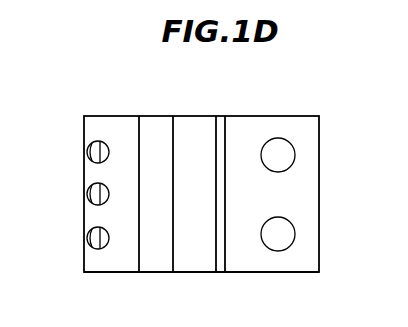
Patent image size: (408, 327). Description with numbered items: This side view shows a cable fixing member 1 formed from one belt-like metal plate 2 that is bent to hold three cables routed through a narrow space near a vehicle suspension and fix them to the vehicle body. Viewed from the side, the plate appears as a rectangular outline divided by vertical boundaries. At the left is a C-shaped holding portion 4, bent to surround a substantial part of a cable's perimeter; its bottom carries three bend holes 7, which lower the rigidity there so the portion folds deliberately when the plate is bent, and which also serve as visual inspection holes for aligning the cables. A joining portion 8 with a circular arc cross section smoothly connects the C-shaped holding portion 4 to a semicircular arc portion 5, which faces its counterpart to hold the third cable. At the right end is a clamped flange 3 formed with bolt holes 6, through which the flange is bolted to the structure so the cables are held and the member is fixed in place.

The cable fixing member 1 is at (97, 99).
The metal plate 2 is at (268, 272).
The clamped flange 3 is at (307, 119).
The C-shaped holding portion 4 is at (90, 127).
The semicircular arc portion 5 is at (195, 119).
The bolt hole 6 is at (283, 241).
The bend hole 7 is at (87, 238).
The joining portion 8 is at (150, 119).